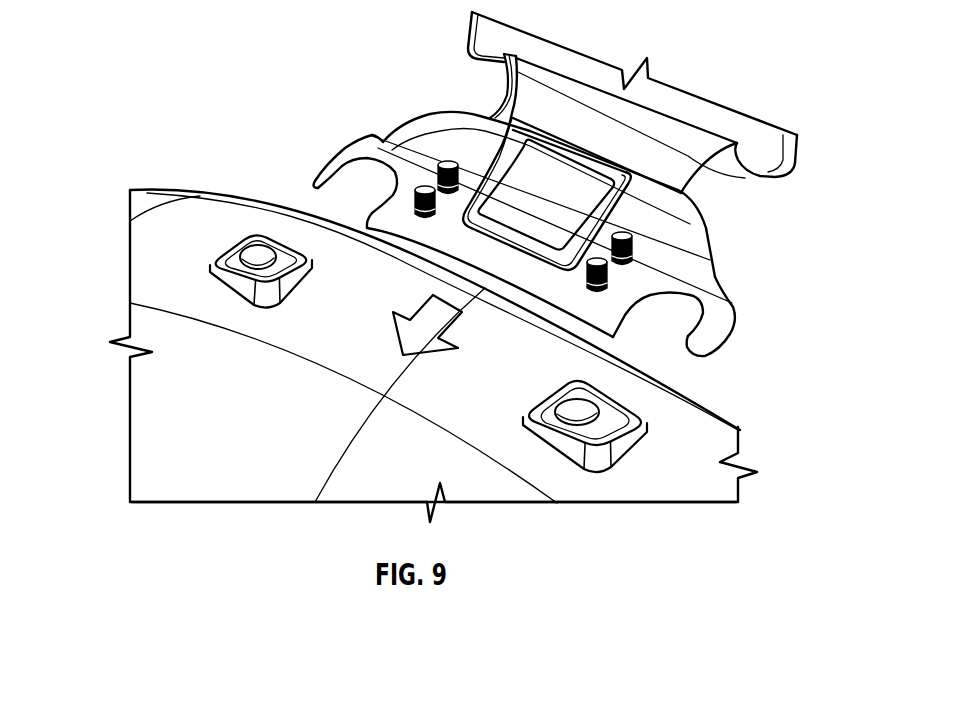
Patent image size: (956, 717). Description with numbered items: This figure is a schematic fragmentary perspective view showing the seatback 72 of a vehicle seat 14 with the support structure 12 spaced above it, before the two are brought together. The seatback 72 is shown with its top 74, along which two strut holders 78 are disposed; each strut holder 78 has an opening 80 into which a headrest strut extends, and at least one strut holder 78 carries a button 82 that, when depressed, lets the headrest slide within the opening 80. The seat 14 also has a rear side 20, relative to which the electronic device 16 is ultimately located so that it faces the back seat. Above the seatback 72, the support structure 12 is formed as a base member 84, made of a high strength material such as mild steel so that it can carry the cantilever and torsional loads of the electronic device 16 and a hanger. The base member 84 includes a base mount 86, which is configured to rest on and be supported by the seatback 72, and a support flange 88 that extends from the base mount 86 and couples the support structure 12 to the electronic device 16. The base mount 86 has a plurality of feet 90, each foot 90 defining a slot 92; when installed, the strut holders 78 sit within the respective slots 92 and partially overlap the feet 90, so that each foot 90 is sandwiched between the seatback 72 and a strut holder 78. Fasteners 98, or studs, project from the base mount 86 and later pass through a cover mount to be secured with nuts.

The support structure 12 is at (560, 184).
The seat 14 is at (424, 295).
The electronic device 16 is at (748, 132).
The rear side 20 is at (733, 421).
The seatback 72 is at (258, 492).
The top 74 is at (192, 210).
The strut holders 78 is at (235, 258).
The opening 80 is at (263, 258).
The button 82 is at (625, 450).
The base member 84 is at (390, 115).
The base mount 86 is at (522, 272).
The support flange 88 is at (515, 116).
The feet 90 is at (337, 158).
The slot 92 is at (358, 172).
The fasteners 98 is at (447, 162).